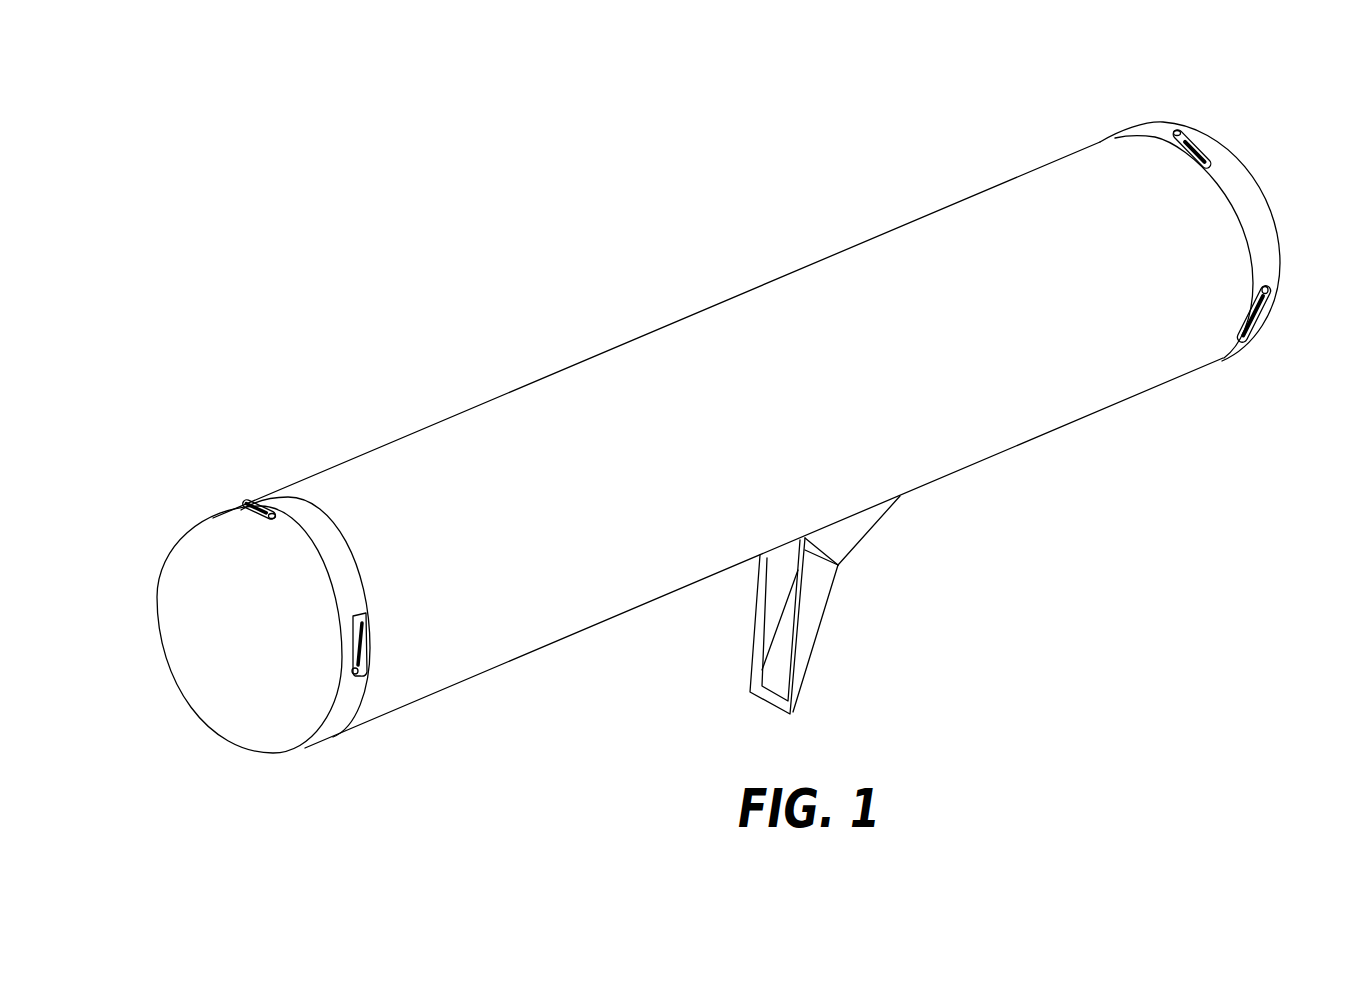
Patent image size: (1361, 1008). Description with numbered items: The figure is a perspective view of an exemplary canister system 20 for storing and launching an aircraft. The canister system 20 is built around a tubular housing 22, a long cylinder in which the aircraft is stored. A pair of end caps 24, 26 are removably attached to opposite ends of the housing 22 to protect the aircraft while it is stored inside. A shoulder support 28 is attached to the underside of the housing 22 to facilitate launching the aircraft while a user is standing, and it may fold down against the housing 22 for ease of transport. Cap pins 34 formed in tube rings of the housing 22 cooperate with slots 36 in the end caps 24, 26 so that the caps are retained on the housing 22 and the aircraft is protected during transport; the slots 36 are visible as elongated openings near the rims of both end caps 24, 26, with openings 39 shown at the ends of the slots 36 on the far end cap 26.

The canister system 20 is at (633, 242).
The tubular housing 22 is at (988, 189).
The end cap 24 is at (201, 527).
The end cap 26 is at (1163, 121).
The shoulder support 28 is at (825, 604).
The cap pin 34 is at (273, 512).
The slot 36 is at (243, 502).
The second end cap hole 39 is at (1178, 131).